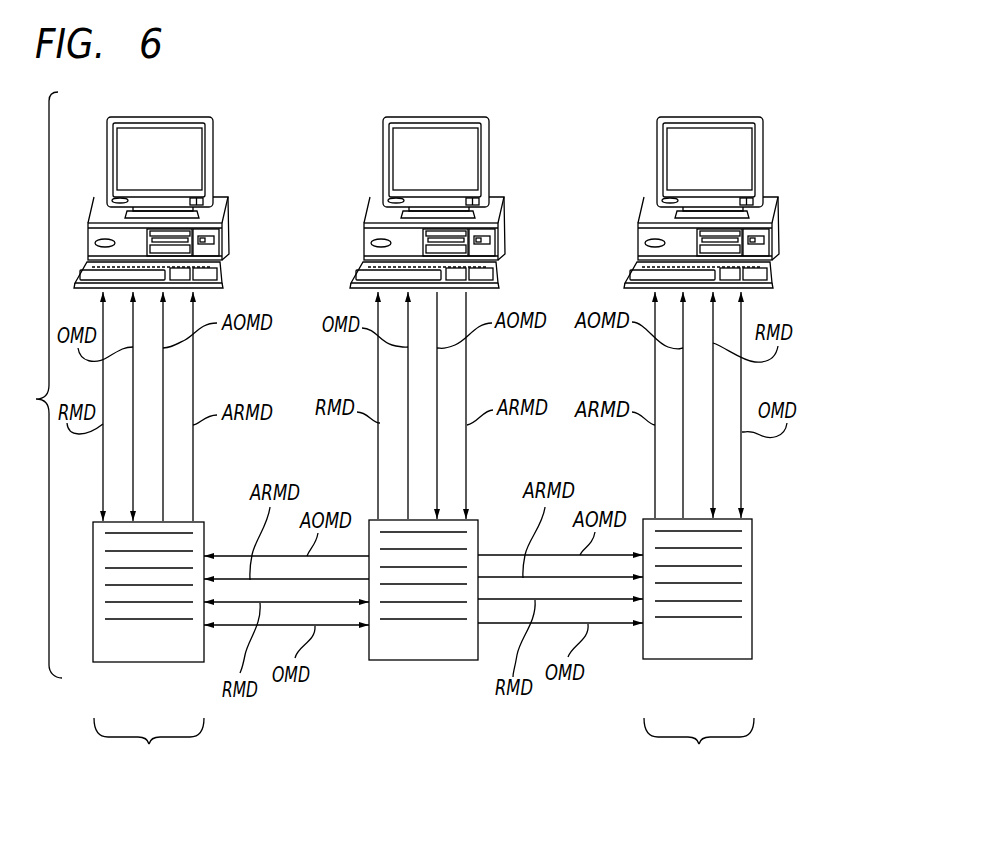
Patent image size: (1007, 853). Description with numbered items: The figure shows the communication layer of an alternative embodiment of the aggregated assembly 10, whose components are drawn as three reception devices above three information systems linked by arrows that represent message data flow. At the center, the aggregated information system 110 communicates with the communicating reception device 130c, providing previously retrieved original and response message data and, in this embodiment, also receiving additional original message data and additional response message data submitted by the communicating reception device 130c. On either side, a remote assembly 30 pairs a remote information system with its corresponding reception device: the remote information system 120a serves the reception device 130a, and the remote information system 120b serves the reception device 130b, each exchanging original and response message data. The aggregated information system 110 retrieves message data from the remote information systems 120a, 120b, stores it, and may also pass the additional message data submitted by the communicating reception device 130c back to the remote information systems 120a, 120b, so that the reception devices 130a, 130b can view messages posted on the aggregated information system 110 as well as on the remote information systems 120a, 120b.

The aggregated assembly 10 is at (33, 385).
The remote assembly 30 is at (424, 745).
The aggregated information system 110 is at (423, 660).
The remote information system 120a is at (150, 662).
The remote information system 120b is at (700, 660).
The reception device 130a is at (133, 117).
The reception device 130b is at (685, 113).
The communicating reception device 130c is at (408, 115).